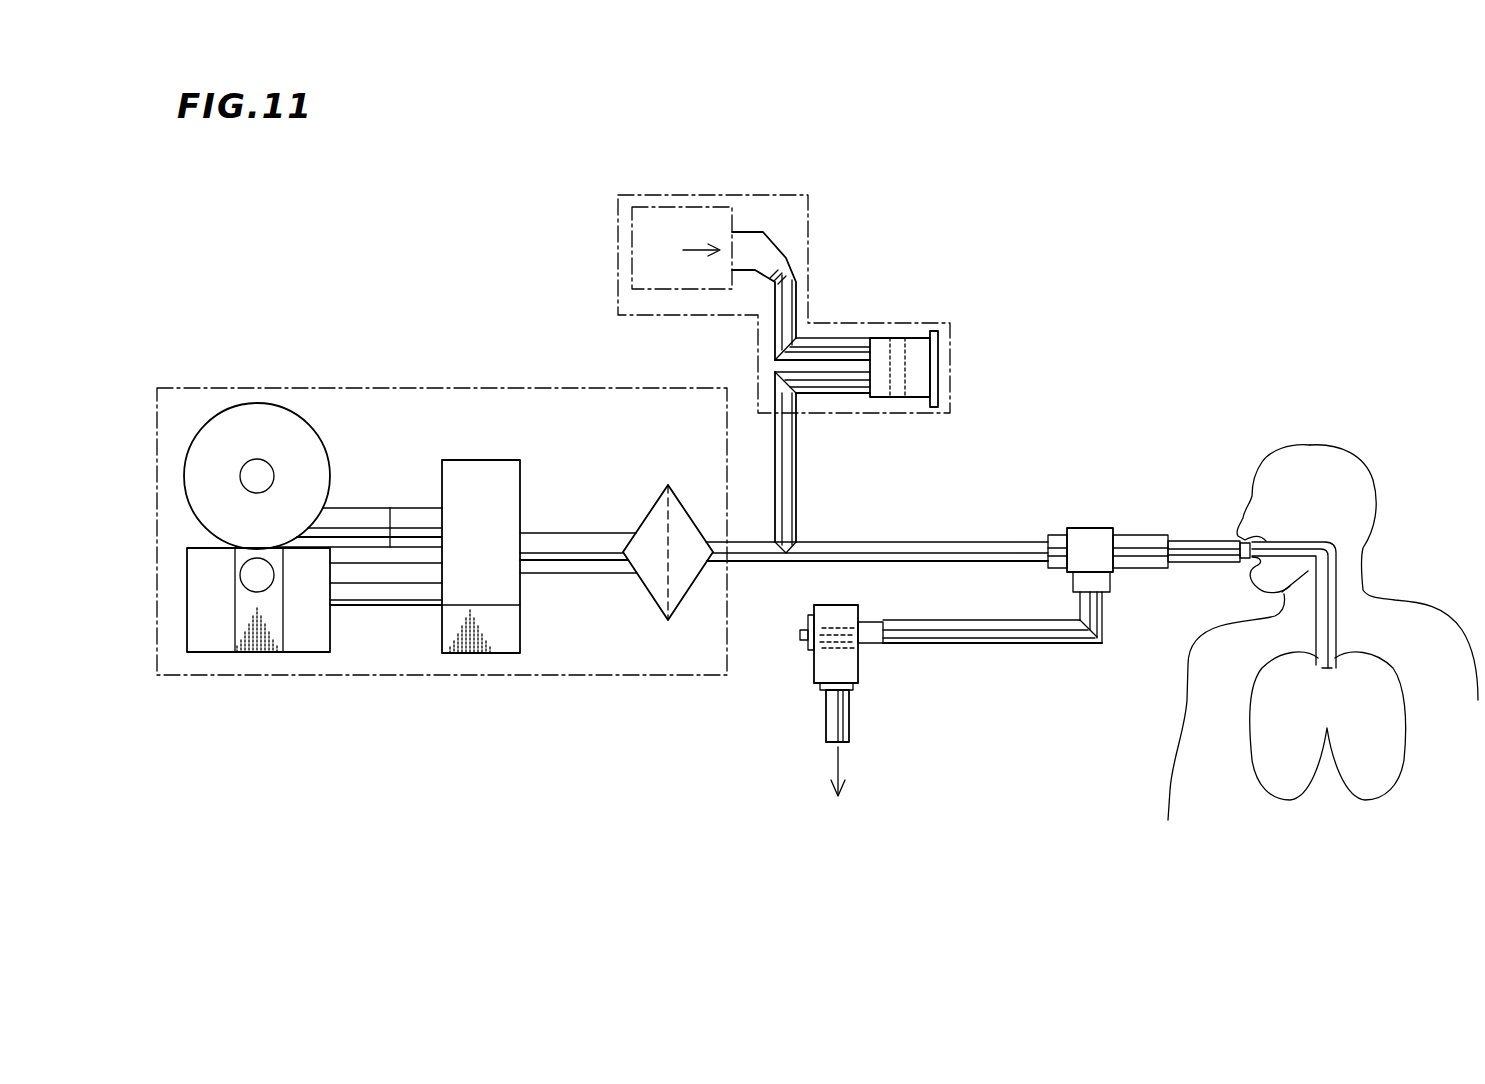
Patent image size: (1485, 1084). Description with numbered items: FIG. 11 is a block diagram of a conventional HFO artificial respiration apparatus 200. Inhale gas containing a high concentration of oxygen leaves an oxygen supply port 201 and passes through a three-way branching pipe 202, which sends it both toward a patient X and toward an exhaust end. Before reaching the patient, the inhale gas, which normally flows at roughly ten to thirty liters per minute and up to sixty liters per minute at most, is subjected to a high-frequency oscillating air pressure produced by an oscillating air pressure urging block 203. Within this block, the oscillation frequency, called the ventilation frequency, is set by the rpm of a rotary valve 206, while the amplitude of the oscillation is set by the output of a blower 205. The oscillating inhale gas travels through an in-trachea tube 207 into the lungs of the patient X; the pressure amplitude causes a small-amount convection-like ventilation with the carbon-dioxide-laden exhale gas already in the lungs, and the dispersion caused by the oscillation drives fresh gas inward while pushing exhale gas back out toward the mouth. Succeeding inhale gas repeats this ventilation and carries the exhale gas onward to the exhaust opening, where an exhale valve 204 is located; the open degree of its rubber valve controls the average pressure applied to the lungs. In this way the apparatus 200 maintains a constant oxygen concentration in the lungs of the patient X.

The HFO artificial respiration apparatus 200 is at (452, 232).
The oxygen supply port 201 is at (740, 195).
The three-way branching pipe 202 is at (1089, 528).
The oscillating air pressure urging block 203 is at (320, 388).
The exhale valve 204 is at (815, 662).
The blower 205 is at (302, 652).
The rotary valve 206 is at (476, 460).
The in-trachea tube 207 is at (1360, 605).
The patient X is at (1310, 445).